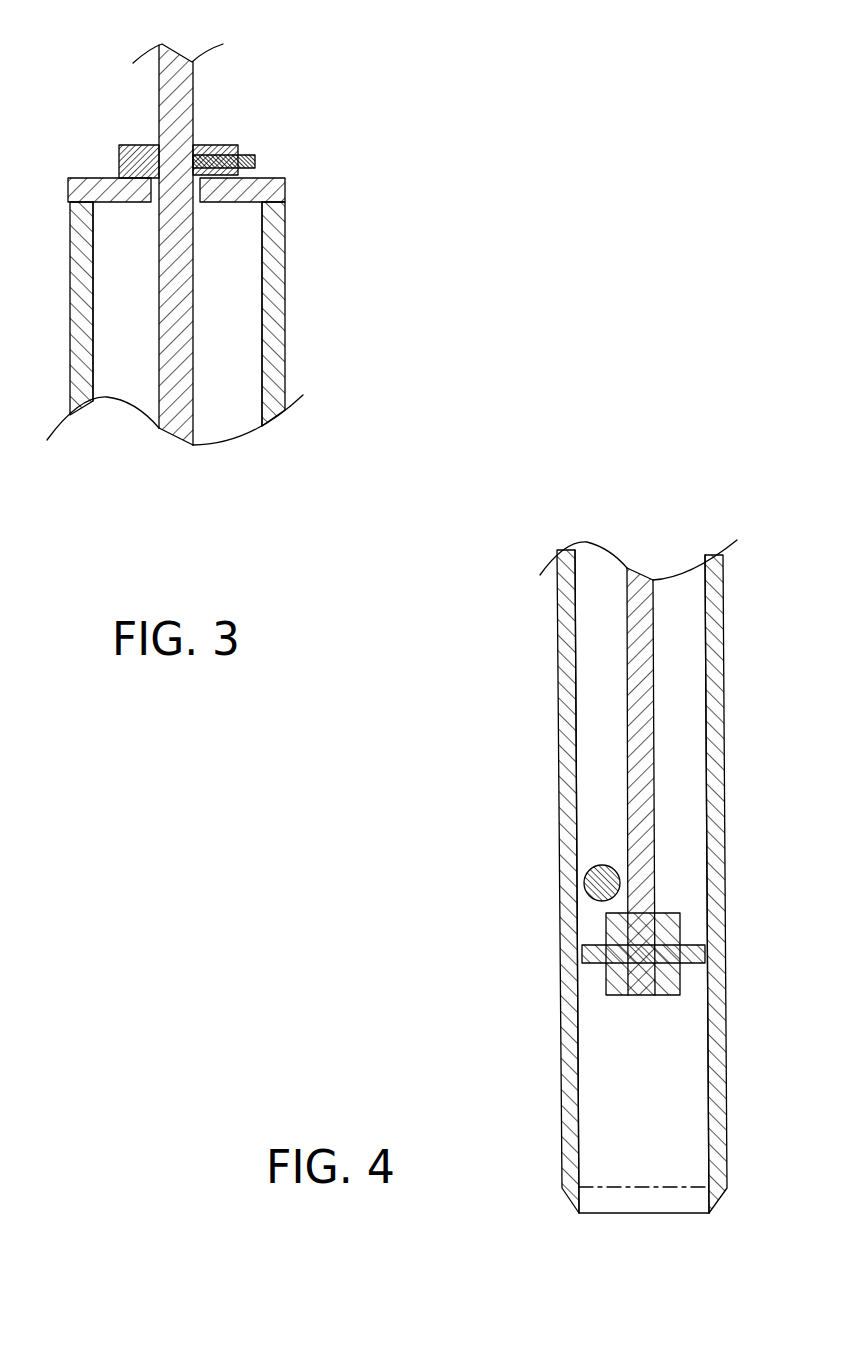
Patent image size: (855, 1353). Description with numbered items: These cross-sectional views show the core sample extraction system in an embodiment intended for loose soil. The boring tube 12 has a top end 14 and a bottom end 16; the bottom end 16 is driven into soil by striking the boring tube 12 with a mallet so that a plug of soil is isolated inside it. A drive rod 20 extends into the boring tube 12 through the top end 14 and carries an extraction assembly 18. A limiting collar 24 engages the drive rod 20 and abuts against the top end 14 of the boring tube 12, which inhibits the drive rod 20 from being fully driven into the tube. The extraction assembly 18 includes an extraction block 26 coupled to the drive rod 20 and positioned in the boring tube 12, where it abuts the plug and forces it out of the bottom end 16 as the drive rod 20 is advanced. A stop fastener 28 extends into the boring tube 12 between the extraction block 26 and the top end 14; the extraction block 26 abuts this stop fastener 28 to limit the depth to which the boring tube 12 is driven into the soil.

In FIG. 3, the boring tube 12 is at (285, 287).
In FIG. 4, the boring tube 12 is at (723, 655).
In FIG. 3, the top end 14 is at (285, 180).
In FIG. 4, the bottom end 16 is at (658, 1214).
In FIG. 3, the extraction assembly 18 is at (193, 94).
In FIG. 4, the extraction assembly 18 is at (653, 608).
In FIG. 3, the drive rod 20 is at (159, 358).
In FIG. 4, the drive rod 20 is at (628, 732).
In FIG. 3, the limiting collar 24 is at (119, 162).
In FIG. 4, the extraction block 26 is at (600, 968).
In FIG. 4, the stop fastener 28 is at (584, 870).